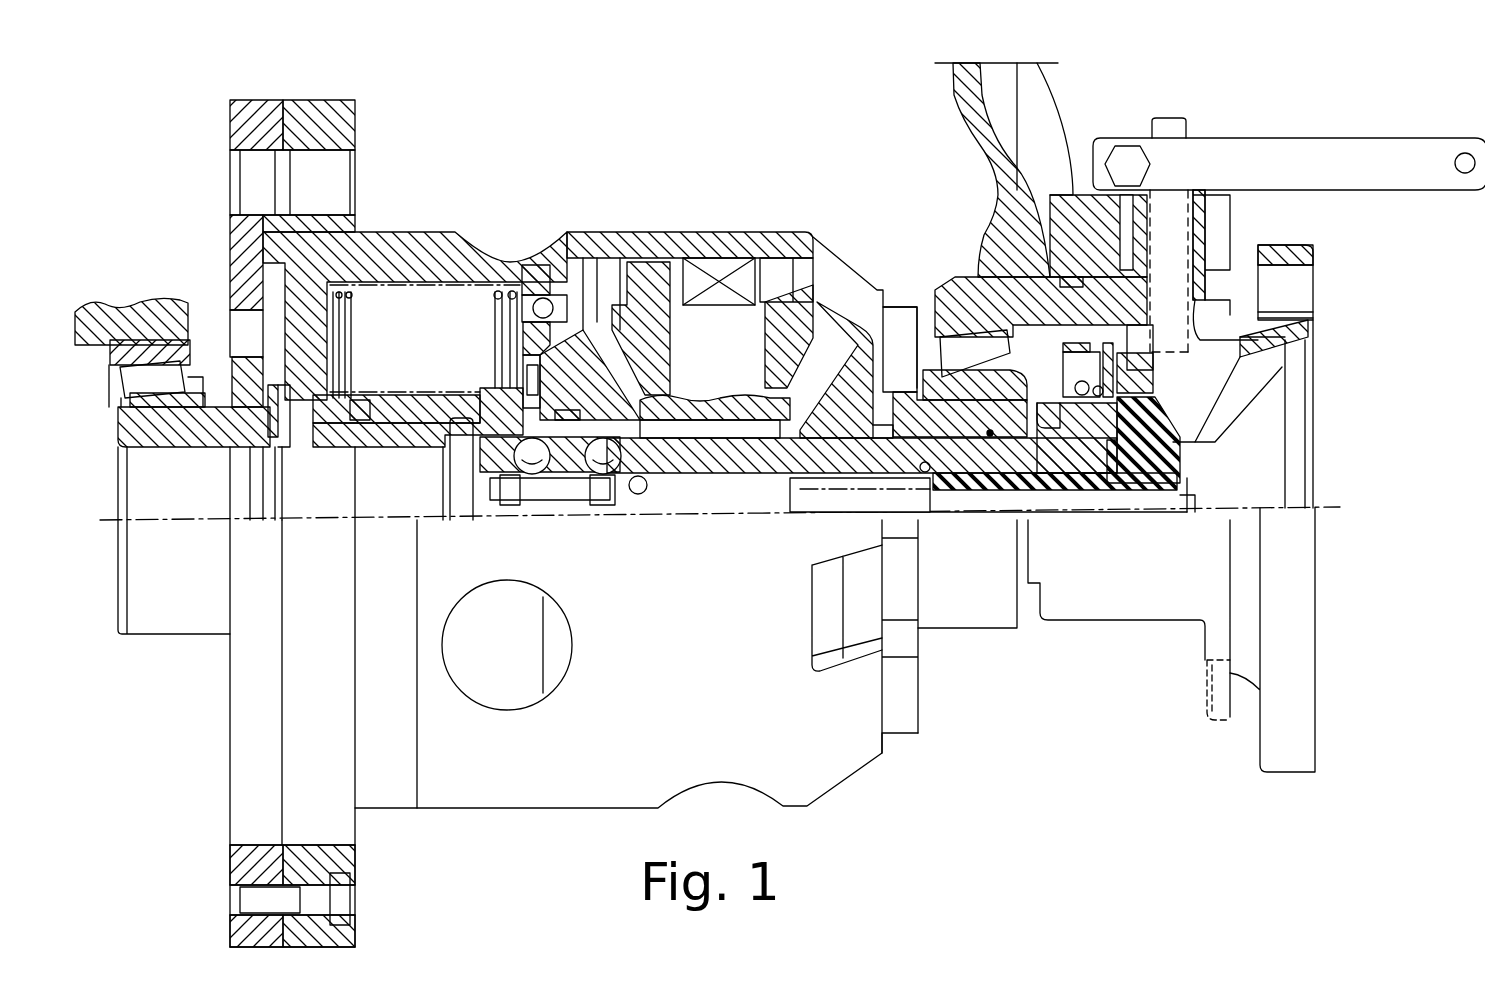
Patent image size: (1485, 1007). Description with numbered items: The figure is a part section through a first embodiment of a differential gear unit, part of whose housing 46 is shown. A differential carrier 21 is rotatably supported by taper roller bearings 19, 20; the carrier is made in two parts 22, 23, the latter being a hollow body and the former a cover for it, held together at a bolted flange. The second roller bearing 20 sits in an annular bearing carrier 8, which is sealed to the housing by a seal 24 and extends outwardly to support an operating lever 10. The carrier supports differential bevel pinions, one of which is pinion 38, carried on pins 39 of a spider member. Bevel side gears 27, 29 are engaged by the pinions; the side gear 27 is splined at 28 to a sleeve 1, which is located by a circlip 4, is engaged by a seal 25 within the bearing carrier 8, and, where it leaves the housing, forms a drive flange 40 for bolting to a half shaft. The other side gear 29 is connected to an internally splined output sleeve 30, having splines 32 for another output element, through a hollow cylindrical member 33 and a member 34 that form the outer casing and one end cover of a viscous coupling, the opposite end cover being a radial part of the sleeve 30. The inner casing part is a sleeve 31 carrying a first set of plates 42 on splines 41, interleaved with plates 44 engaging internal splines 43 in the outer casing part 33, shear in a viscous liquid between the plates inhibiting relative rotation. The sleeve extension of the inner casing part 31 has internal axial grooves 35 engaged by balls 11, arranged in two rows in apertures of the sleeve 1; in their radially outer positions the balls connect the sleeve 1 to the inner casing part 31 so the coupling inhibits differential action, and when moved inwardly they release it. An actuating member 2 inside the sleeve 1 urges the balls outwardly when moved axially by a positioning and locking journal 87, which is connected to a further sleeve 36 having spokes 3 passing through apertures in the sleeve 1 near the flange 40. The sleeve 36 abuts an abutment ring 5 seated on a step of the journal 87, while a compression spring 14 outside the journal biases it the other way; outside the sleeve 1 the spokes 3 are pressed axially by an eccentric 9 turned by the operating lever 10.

The sleeve 1 is at (955, 472).
The actuating member 2 is at (585, 480).
The spokes 3 is at (1185, 460).
The circlip 4 is at (1000, 484).
The abutment ring 5 is at (936, 492).
The annular bearing carrier 8 is at (1000, 290).
The eccentric 9 is at (1145, 352).
The operating lever 10 is at (1385, 165).
The balls 11 is at (520, 478).
The compression spring 14 is at (845, 495).
The taper roller bearing 19 is at (128, 378).
The taper roller bearing 20 is at (948, 328).
The differential carrier 21 is at (655, 226).
The cover part of differential carrier 22 is at (250, 108).
The hollow body part of differential carrier 23 is at (330, 108).
The seal 24 is at (1068, 275).
The seal 25 is at (1078, 375).
The bevel side gear 27 is at (848, 380).
The splines 28 is at (897, 385).
The bevel side gear 29 is at (568, 350).
The output sleeve 30 is at (300, 426).
The inner casing part 31 is at (497, 408).
The splines 32 is at (318, 450).
The outer casing part 33 is at (440, 256).
The end cover part 34 is at (548, 268).
The grooves 35 is at (570, 480).
The further sleeve 36 is at (1062, 482).
The differential bevel pinion 38 is at (787, 320).
The pin 39 is at (740, 325).
The drive flange 40 is at (1305, 262).
The splines 41 is at (405, 392).
The plates of first set 42 is at (355, 365).
The internal splines 43 is at (440, 292).
The plates of second set 44 is at (480, 290).
The housing 46 is at (1000, 220).
The positioning and locking journal 87 is at (1120, 500).